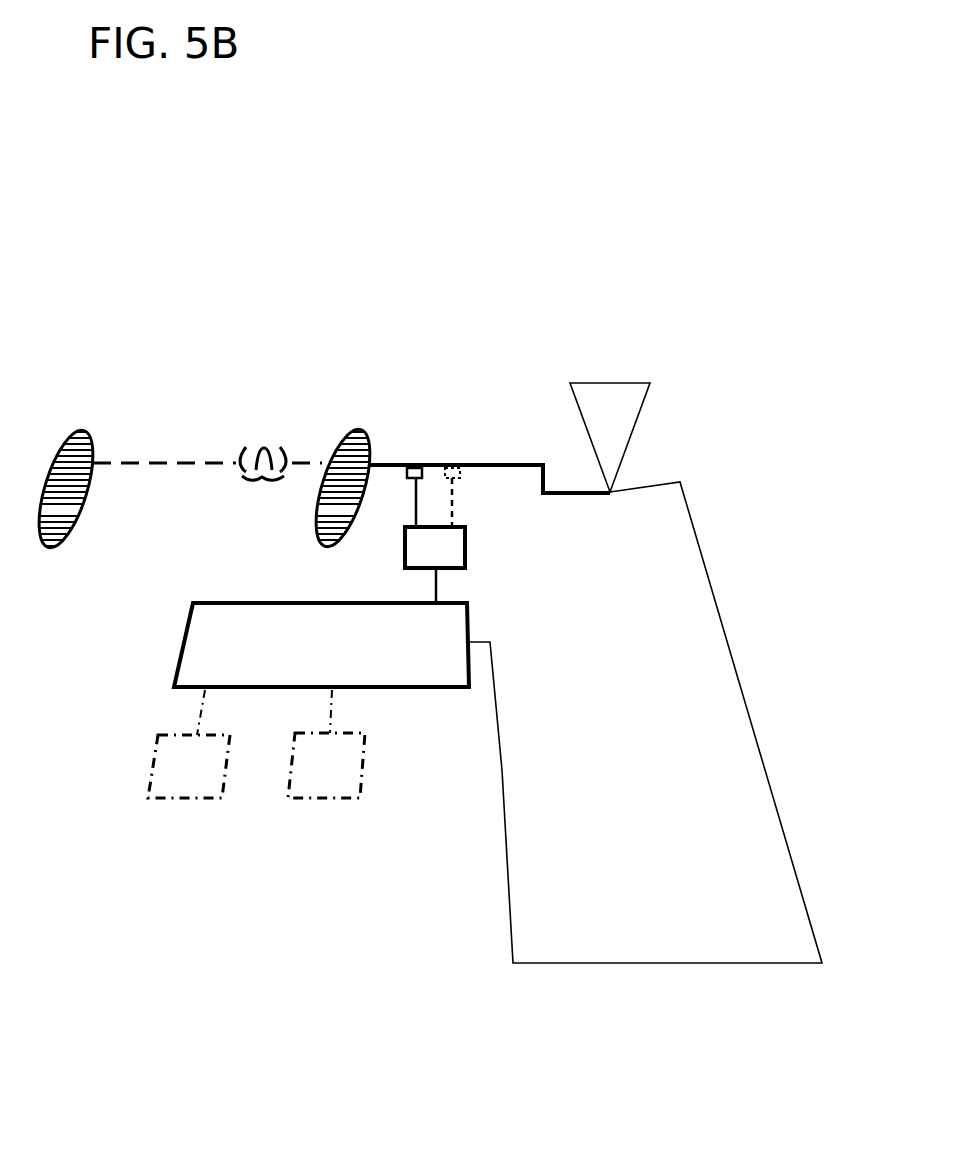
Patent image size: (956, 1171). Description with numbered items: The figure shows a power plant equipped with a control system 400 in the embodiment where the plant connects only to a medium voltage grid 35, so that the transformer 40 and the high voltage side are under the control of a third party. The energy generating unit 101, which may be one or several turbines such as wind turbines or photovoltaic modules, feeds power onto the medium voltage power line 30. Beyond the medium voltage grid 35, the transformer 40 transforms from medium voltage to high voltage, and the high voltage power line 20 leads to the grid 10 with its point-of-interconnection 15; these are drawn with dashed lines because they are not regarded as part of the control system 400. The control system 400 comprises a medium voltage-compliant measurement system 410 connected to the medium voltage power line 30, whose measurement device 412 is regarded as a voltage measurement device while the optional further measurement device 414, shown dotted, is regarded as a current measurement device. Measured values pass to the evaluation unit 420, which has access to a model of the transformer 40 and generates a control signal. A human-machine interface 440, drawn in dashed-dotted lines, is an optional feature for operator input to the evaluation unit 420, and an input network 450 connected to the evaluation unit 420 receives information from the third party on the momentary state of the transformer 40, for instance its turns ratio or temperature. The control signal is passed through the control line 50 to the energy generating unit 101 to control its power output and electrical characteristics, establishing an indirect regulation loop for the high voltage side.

The grid 10 is at (87, 469).
The point-of-interconnection 15 is at (98, 458).
The high voltage power line 20 is at (205, 460).
The transformer 40 is at (277, 452).
The medium voltage grid 35 is at (360, 432).
The medium voltage power line 30 is at (440, 461).
The energy generating unit 101 is at (632, 634).
The control line 50 is at (505, 873).
The measurement device 412 is at (413, 478).
The further measurement device 414 is at (455, 478).
The medium voltage-compliant measurement system 410 is at (466, 553).
The evaluation unit 420 is at (173, 670).
The input network 450 is at (155, 765).
The human-machine interface 440 is at (322, 798).
The control system 400 is at (313, 703).